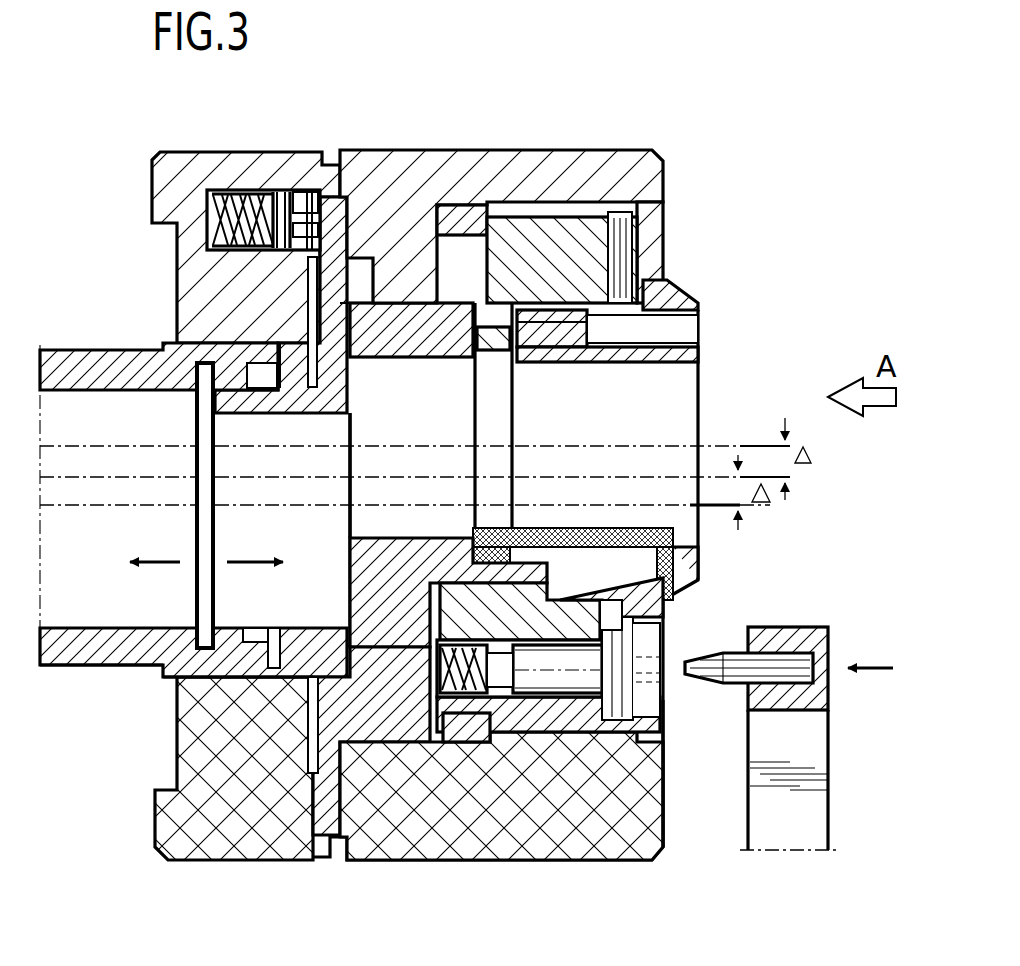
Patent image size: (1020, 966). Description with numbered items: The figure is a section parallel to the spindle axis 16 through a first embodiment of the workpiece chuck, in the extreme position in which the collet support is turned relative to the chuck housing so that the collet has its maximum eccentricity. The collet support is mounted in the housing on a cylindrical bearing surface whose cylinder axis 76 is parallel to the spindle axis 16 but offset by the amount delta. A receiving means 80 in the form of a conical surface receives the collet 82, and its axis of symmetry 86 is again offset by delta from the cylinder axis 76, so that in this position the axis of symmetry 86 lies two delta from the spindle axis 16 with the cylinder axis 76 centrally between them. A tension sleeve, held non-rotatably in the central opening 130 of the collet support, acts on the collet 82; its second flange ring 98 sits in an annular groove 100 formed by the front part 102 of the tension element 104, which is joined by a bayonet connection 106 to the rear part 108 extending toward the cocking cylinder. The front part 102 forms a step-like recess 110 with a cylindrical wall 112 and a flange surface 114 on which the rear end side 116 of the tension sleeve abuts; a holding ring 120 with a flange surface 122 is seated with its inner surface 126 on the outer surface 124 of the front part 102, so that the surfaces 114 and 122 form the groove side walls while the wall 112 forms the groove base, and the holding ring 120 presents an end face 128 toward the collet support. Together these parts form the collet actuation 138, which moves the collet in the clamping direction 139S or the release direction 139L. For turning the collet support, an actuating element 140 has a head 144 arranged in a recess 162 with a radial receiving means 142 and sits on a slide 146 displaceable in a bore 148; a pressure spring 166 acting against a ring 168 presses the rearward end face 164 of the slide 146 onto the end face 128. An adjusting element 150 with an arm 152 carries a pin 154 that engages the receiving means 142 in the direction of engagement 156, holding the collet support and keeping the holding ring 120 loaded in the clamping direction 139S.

The spindle axis 16 is at (738, 505).
The cylinder axis 76 is at (765, 462).
The receiving means 80 is at (672, 572).
The collet 82 is at (600, 586).
The axis of symmetry 86 is at (763, 442).
The second flange ring 98 is at (217, 861).
The annular groove 100 is at (373, 700).
The front part 102 is at (157, 848).
The tension element 104 is at (307, 667).
The bayonet connection 106 is at (233, 377).
The rear part 108 is at (102, 668).
The step-like recess 110 is at (445, 255).
The wall 112 is at (408, 200).
The flange surface 114 is at (363, 302).
The rear end side 116 is at (352, 297).
The holding ring 120 is at (397, 750).
The flange surface 122 is at (370, 642).
The outer surface 124 is at (297, 632).
The inner surface 126 is at (372, 297).
The end face 128 is at (462, 742).
The central opening 130 is at (508, 290).
The collet actuation 138 is at (143, 343).
The clamping direction 139S is at (150, 565).
The release direction 139L is at (247, 565).
The actuating element 140 is at (667, 803).
The receiving means 142 is at (661, 718).
The head 144 is at (662, 698).
The slide 146 is at (590, 716).
The bore 148 is at (659, 745).
The adjusting element 150 is at (868, 703).
The arm 152 is at (812, 763).
The pin 154 is at (780, 658).
The direction of engagement 156 is at (873, 662).
The recess 162 is at (650, 623).
The rearward end face 164 is at (432, 682).
The pressure spring 166 is at (557, 700).
The ring 168 is at (465, 694).